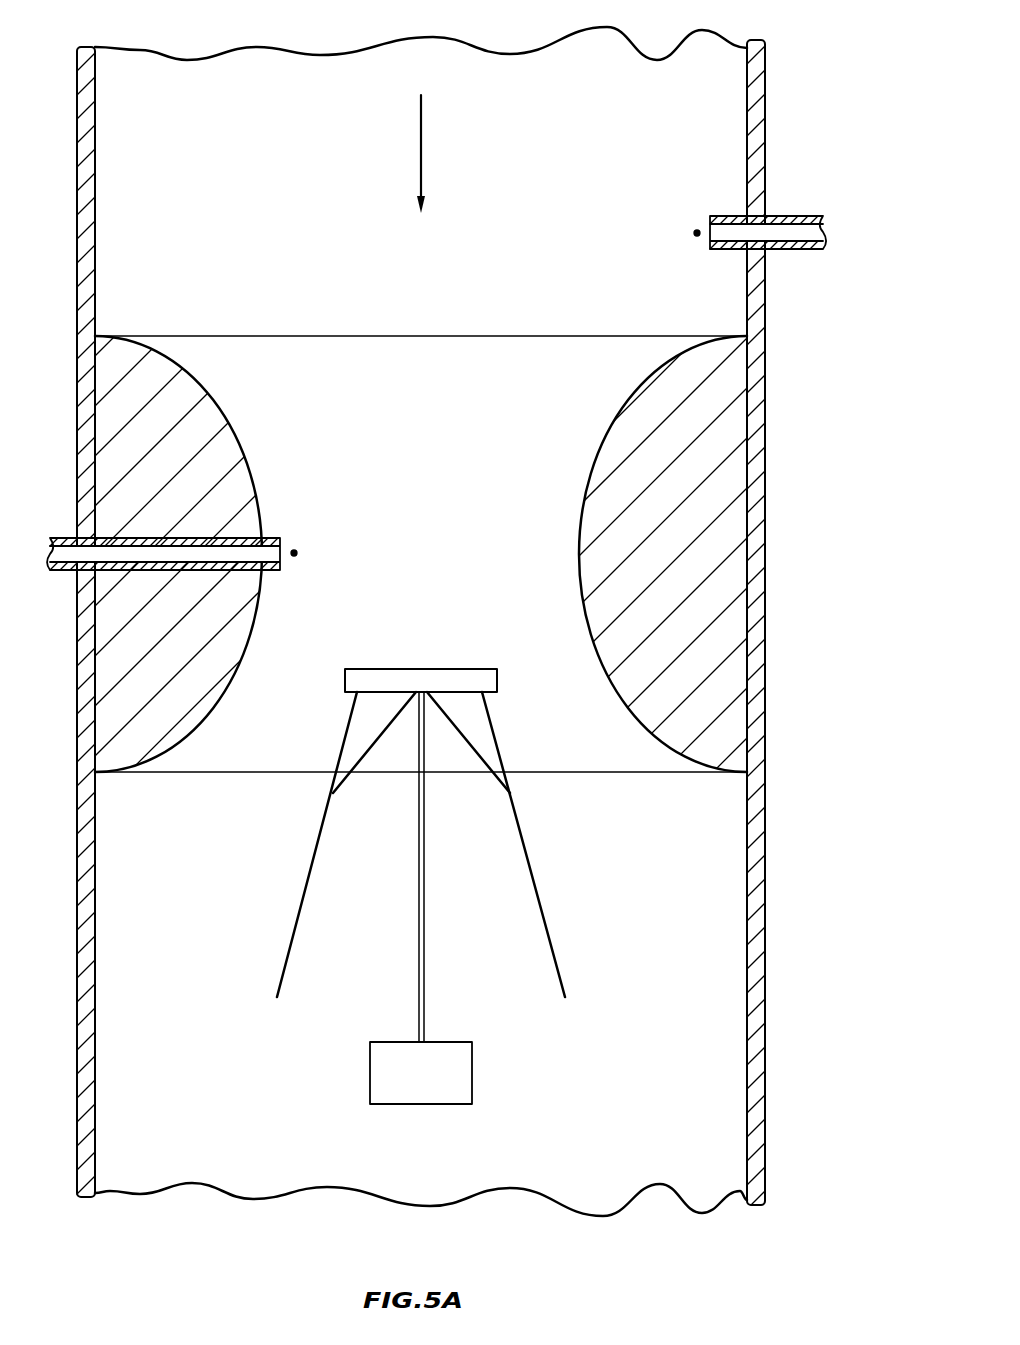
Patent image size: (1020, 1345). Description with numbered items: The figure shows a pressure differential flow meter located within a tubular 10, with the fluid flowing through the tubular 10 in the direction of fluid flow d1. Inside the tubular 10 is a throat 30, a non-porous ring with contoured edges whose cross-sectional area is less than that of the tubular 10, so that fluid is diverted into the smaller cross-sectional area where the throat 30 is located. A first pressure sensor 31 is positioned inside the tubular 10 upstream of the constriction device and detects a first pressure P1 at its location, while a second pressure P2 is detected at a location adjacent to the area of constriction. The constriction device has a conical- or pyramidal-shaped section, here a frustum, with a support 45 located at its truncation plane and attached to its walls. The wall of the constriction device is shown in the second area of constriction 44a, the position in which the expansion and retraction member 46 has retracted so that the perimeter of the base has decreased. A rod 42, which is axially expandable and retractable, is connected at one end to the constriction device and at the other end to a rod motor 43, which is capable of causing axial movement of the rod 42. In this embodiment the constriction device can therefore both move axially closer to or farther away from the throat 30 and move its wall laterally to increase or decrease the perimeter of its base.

The tubular 10 is at (765, 73).
The first pressure sensor 31 is at (782, 230).
The throat 30 is at (708, 488).
The support 45 is at (458, 668).
The expansion and retraction member 46 is at (480, 766).
The second area of constriction 44a is at (523, 843).
The rod 42 is at (422, 897).
The rod motor 43 is at (434, 1088).
The first pressure P1 is at (697, 233).
The second pressure P2 is at (294, 553).
The direction of fluid flow d1 is at (421, 142).